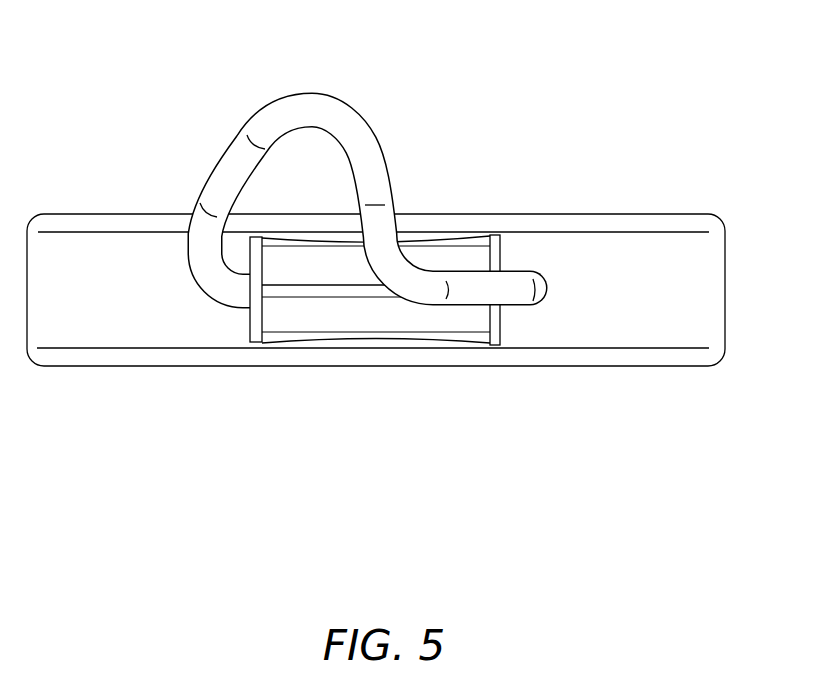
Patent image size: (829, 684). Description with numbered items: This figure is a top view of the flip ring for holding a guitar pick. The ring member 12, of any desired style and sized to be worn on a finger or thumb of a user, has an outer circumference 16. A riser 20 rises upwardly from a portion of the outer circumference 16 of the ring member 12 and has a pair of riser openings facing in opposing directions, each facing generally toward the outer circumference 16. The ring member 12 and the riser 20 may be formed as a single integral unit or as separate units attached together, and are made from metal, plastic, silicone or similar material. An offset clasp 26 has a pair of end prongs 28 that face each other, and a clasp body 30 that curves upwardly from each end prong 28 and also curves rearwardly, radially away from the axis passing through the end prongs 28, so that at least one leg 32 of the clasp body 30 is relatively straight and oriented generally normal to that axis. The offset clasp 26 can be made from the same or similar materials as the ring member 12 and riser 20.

The ring member 12 is at (412, 225).
The outer circumference 16 is at (690, 283).
The riser 20 is at (378, 354).
The offset clasp 26 is at (374, 160).
The end prongs 28 is at (250, 293).
The clasp body 30 is at (306, 108).
The leg 32 is at (378, 200).